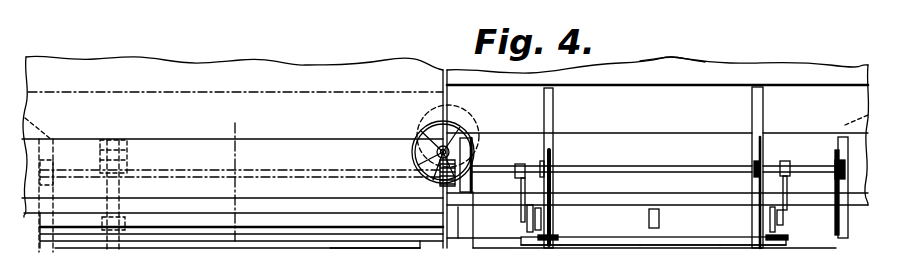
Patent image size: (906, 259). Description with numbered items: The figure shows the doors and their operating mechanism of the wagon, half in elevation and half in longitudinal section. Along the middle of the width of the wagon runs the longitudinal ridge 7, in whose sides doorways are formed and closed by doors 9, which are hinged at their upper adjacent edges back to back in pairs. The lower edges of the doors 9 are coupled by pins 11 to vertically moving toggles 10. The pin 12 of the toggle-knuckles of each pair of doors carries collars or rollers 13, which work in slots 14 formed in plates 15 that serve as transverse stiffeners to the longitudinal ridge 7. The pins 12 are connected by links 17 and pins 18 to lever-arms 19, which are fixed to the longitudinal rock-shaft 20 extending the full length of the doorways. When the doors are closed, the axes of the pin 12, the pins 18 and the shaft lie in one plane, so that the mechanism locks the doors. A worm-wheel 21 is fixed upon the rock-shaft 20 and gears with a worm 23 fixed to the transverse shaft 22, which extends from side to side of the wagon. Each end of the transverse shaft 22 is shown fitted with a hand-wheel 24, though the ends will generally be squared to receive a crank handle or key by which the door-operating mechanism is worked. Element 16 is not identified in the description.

The longitudinal ridge 7 is at (684, 61).
The doors 9 is at (639, 222).
The toggles 10 is at (347, 246).
The pins 11 is at (540, 252).
The pin 12 is at (680, 252).
The collars or rollers 13 is at (556, 249).
The slots 14 is at (765, 151).
The plates 15 is at (766, 109).
The lower bracket 16 is at (753, 252).
The links 17 is at (551, 227).
The pins 18 is at (527, 216).
The lever-arms 19 is at (523, 183).
The longitudinal rock-shaft 20 is at (290, 164).
The worm-wheel 21 is at (445, 183).
The transverse shaft 22 is at (447, 150).
The worm 23 is at (415, 152).
The hand-wheel 24 is at (428, 133).